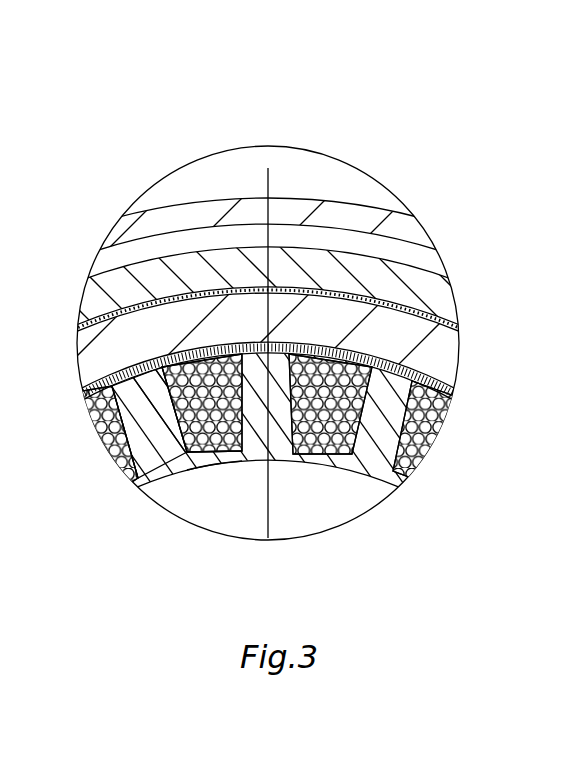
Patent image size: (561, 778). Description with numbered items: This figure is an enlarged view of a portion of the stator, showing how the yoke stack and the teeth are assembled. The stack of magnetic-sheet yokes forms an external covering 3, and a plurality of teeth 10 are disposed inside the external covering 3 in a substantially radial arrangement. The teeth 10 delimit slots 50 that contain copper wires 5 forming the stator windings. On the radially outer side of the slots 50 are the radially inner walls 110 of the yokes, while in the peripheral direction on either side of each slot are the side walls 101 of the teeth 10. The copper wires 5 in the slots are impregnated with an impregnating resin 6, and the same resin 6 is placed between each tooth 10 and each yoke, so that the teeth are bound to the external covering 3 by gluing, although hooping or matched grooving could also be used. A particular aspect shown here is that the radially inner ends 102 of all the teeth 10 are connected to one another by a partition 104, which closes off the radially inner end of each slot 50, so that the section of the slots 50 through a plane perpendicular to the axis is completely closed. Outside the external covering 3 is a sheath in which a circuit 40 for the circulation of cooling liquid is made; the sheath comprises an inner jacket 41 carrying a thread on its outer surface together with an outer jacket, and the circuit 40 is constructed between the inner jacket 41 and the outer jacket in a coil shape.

The external covering 3 is at (322, 322).
The copper wires 5 is at (298, 452).
The impregnating resin 6 is at (408, 376).
The teeth 10 is at (133, 477).
The circuit 40 is at (248, 232).
The inner jacket 41 is at (203, 260).
The slots 50 is at (327, 455).
The side walls 101 is at (202, 455).
The radially inner ends 102 is at (147, 428).
The partition 104 is at (237, 436).
The radially inner walls 110 is at (447, 402).